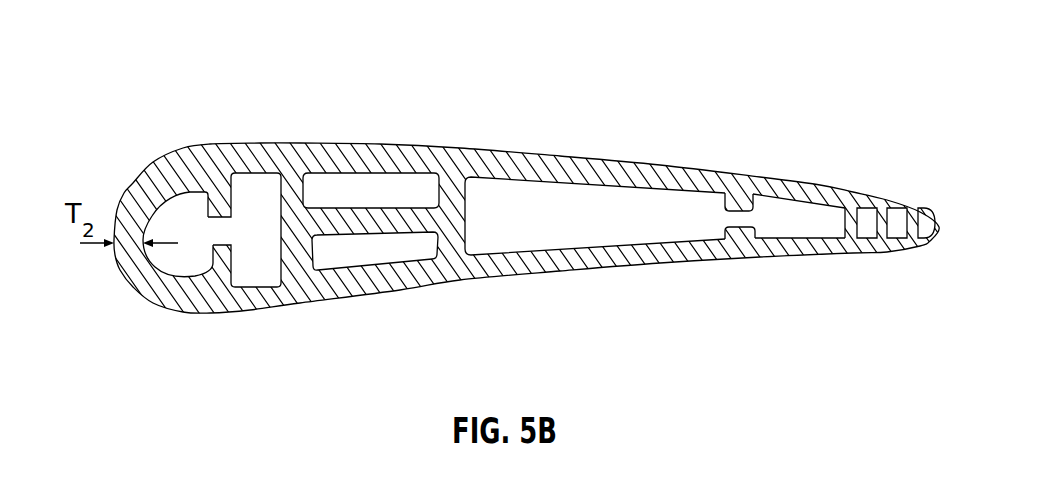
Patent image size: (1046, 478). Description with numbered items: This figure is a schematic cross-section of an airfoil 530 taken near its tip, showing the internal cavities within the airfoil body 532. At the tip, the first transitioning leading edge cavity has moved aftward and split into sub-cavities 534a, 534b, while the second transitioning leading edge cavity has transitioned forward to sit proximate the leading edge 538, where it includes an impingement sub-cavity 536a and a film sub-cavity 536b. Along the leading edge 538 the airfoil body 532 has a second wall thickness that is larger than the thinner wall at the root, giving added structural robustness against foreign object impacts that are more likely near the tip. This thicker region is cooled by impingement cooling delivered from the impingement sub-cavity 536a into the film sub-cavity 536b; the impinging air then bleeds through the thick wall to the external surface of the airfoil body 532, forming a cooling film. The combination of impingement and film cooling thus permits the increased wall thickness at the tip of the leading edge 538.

The airfoil 530 is at (838, 155).
The airfoil body 532 is at (742, 192).
The sub-cavity 534a is at (367, 248).
The sub-cavity 534b is at (367, 190).
The impingement sub-cavity 536a is at (258, 197).
The film sub-cavity 536b is at (177, 230).
The leading edge 538 is at (140, 190).